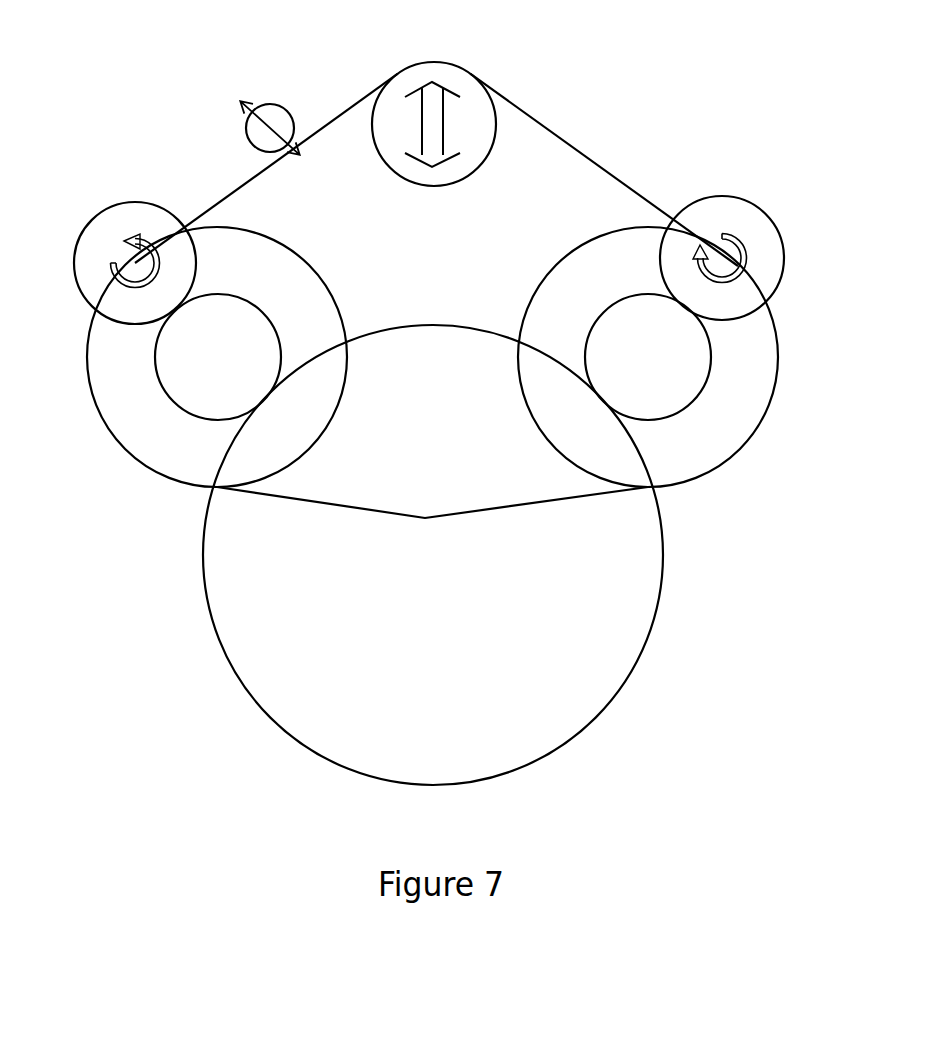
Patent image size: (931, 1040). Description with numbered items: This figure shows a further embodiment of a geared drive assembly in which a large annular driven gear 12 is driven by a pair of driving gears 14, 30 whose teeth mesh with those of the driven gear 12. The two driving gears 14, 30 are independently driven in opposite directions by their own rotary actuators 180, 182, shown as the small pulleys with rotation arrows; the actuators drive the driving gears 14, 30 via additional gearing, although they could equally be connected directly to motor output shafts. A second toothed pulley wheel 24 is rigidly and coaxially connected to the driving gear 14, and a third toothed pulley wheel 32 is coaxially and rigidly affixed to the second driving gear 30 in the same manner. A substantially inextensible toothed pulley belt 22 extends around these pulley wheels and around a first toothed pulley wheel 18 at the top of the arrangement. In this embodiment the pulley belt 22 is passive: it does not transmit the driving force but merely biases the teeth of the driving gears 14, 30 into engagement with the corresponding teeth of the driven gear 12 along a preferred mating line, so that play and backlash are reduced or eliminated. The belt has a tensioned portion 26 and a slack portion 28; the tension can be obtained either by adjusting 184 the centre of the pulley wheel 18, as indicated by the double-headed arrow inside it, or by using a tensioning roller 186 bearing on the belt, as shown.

The driven gear 12 is at (433, 555).
The driving gear 14 is at (648, 357).
The first toothed pulley wheel 18 is at (445, 125).
The toothed pulley belt 22 is at (635, 185).
The second toothed pulley wheel 24 is at (722, 435).
The tensioned portion 26 is at (348, 105).
The slack portion 28 is at (433, 443).
The second driving gear 30 is at (218, 357).
The third toothed pulley wheel 32 is at (157, 435).
The rotary actuator 180 is at (742, 235).
The rotary actuator 182 is at (112, 235).
The adjusting of the pulley wheel centre 184 is at (428, 130).
The tensioning roller 186 is at (252, 133).